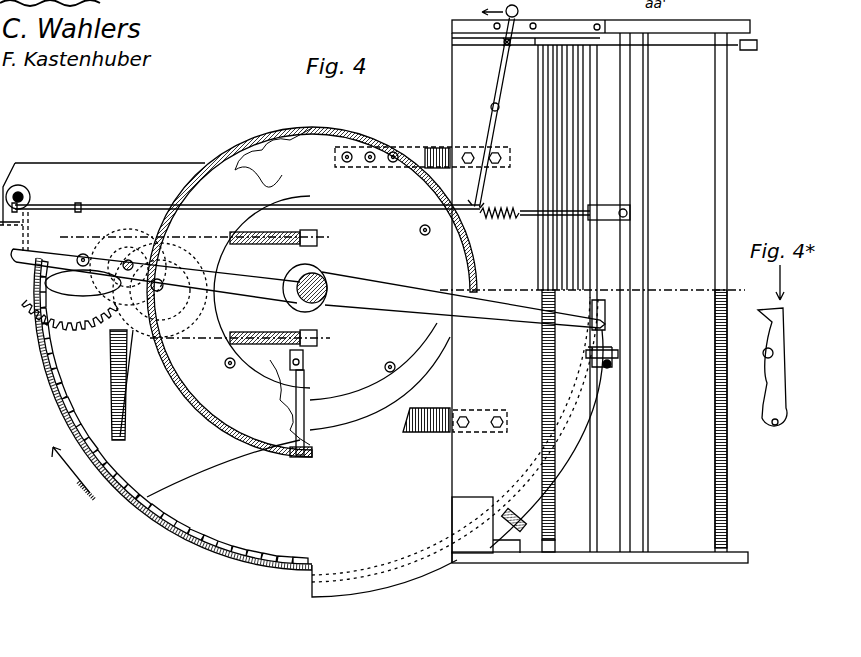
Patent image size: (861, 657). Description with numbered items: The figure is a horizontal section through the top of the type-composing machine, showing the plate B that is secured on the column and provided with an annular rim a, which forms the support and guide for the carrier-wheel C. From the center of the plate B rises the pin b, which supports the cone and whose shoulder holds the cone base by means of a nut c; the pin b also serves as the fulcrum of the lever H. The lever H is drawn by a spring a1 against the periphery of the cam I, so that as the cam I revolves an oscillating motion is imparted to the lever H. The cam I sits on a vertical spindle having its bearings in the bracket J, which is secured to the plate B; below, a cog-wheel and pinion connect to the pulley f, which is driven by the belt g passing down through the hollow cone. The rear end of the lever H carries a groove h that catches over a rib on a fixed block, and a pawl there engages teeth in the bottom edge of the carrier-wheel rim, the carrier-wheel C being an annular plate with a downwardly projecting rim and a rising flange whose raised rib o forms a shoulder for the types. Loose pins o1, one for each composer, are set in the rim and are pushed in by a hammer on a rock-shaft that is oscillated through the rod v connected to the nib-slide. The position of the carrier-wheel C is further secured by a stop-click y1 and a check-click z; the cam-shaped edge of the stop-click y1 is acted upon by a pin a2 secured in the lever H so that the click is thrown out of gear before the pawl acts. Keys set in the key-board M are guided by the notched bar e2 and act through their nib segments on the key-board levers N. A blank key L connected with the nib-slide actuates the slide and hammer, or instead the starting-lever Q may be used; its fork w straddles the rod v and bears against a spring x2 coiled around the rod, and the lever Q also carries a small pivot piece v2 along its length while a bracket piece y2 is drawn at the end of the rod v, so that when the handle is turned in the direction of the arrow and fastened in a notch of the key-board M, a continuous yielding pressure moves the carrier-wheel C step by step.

In FIG. 4, the plate B is at (312, 292).
In FIG. 4, the annular rim a is at (283, 122).
In FIG. 4, the bracket J is at (102, 207).
In FIG. 4, the check-click z is at (21, 193).
In FIG. 4, the rod v is at (246, 201).
In FIG. 4, the cam I is at (155, 276).
In FIG. 4, the pin b is at (83, 269).
In FIG. 4, the nut c is at (148, 283).
In FIG. 4, the lever H is at (488, 296).
In FIG. 4, the pulley f is at (70, 318).
In FIG. 4, the spring a1 is at (202, 413).
In FIG. 4, the belt g is at (195, 343).
In FIG. 4, the carrier-wheel C is at (318, 427).
In FIG. 4, the raised rib o is at (110, 500).
In FIG. 4, the pins o1 is at (146, 459).
In FIG. 4, the groove h is at (204, 553).
In FIG. 4, the key-board M is at (604, 289).
In FIG. 4, the blank key L is at (756, 34).
In FIG. 4, the key-board levers N is at (563, 148).
In FIG. 4, the notched bar e2 is at (542, 421).
In FIG. 4, the stop-click y1 is at (602, 331).
In FIG. 4, the starting-lever Q is at (493, 106).
In FIG. 4, the pin v2 is at (510, 108).
In FIG. 4, the fork w is at (501, 204).
In FIG. 4, the spring x2 is at (535, 205).
In FIG. 4, the bracket y2 is at (609, 206).
The pin a2 is at (770, 367).